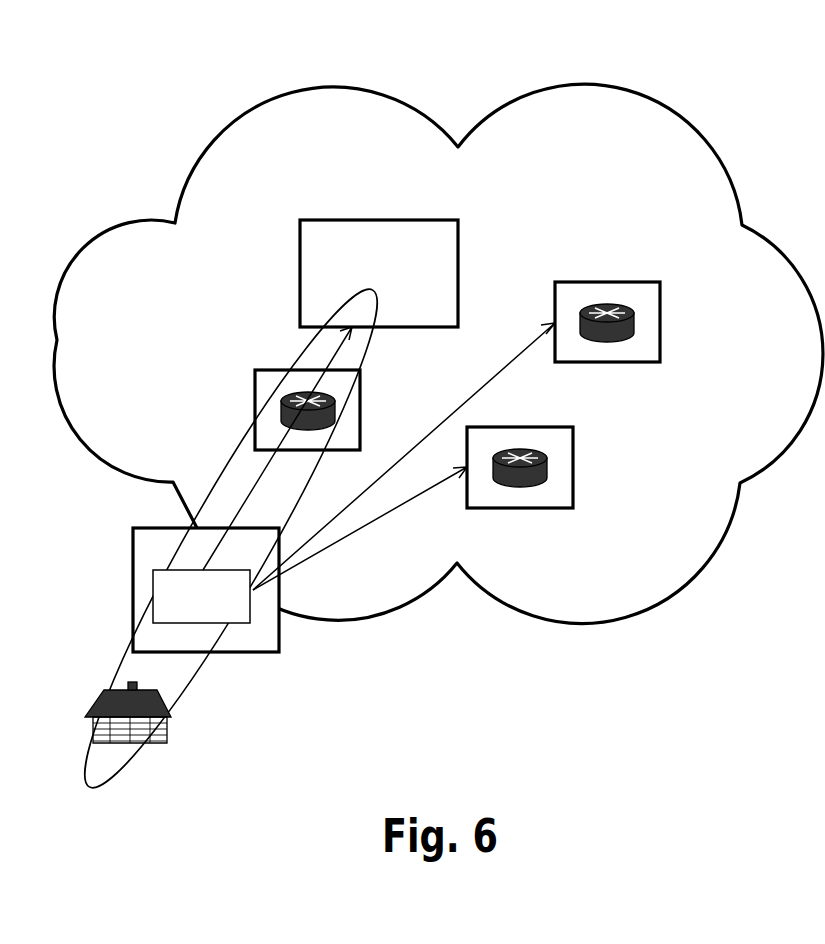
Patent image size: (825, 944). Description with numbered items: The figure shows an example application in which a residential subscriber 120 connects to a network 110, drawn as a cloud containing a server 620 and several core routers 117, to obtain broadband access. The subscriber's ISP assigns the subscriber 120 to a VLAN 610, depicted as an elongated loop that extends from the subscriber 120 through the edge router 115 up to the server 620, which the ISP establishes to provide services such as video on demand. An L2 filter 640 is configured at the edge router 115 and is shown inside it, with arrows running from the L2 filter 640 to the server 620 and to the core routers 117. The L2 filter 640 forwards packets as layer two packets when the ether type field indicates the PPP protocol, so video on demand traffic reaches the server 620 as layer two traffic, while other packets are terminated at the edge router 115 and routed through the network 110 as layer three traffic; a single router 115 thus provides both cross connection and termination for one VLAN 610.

The network 110 is at (657, 107).
The edge router 115 is at (133, 590).
The core router 117 is at (360, 388).
The residential subscriber 120 is at (170, 740).
The VLAN 610 is at (222, 461).
The server 620 is at (448, 220).
The L2 filter 640 is at (251, 620).